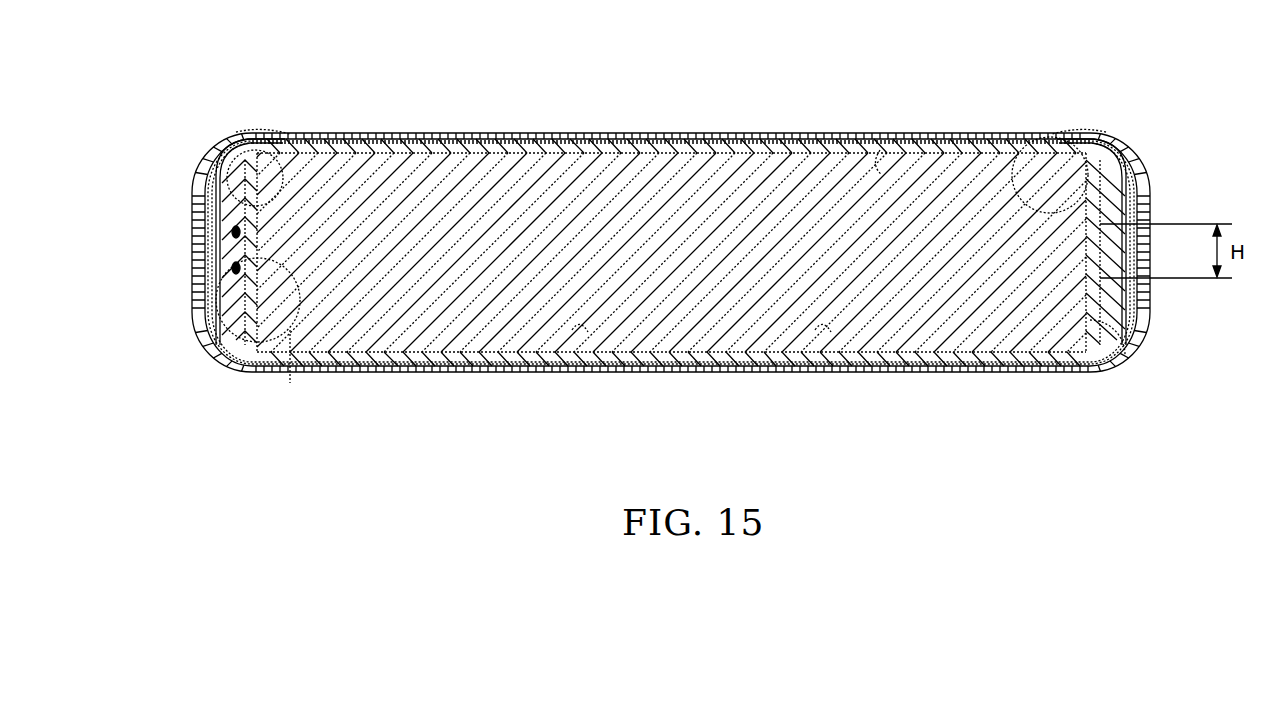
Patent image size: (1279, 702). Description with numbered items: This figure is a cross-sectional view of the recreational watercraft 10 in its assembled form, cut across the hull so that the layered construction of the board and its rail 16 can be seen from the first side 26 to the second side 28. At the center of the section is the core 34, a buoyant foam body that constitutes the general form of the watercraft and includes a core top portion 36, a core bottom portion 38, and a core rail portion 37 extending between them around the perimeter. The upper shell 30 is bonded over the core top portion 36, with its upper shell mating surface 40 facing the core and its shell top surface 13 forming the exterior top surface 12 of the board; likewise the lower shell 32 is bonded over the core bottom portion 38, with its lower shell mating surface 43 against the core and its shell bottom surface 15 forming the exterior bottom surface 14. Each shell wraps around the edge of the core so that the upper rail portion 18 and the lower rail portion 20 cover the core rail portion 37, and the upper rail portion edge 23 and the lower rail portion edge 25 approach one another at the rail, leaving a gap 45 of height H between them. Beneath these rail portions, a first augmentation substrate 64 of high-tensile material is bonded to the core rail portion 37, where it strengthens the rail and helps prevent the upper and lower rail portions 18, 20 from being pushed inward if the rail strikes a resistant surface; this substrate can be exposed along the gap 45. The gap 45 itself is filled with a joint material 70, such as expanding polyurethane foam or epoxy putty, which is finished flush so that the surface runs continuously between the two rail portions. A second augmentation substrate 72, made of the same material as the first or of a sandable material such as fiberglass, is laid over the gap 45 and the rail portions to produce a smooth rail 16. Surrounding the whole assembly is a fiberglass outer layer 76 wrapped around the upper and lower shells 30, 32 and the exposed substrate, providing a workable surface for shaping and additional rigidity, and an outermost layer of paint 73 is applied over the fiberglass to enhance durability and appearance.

The recreational watercraft 10 is at (1207, 118).
The top surface 12 is at (651, 140).
The shell top surface 13 is at (580, 141).
The bottom surface 14 is at (645, 370).
The shell bottom surface 15 is at (725, 371).
The rail 16 is at (157, 260).
The upper rail portion 18 is at (229, 158).
The lower rail portion 20 is at (216, 336).
The upper rail portion edge 23 is at (1118, 152).
The lower rail portion edge 25 is at (1120, 355).
The first side 26 is at (1190, 184).
The second side 28 is at (128, 190).
The upper shell 30 is at (376, 139).
The lower shell 32 is at (886, 366).
The core 34 is at (347, 345).
The core top portion 36 is at (880, 150).
The core rail portion 37 is at (1048, 137).
The core bottom portion 38 is at (822, 335).
The upper shell mating surface 40 is at (775, 155).
The lower shell mating surface 43 is at (580, 335).
The gap 45 is at (289, 368).
The first augmentation substrate 64 is at (273, 132).
The joint material 70 is at (230, 238).
The second augmentation substrate 72 is at (226, 296).
The paint 73 is at (205, 176).
The fiberglass outer layer 76 is at (505, 145).